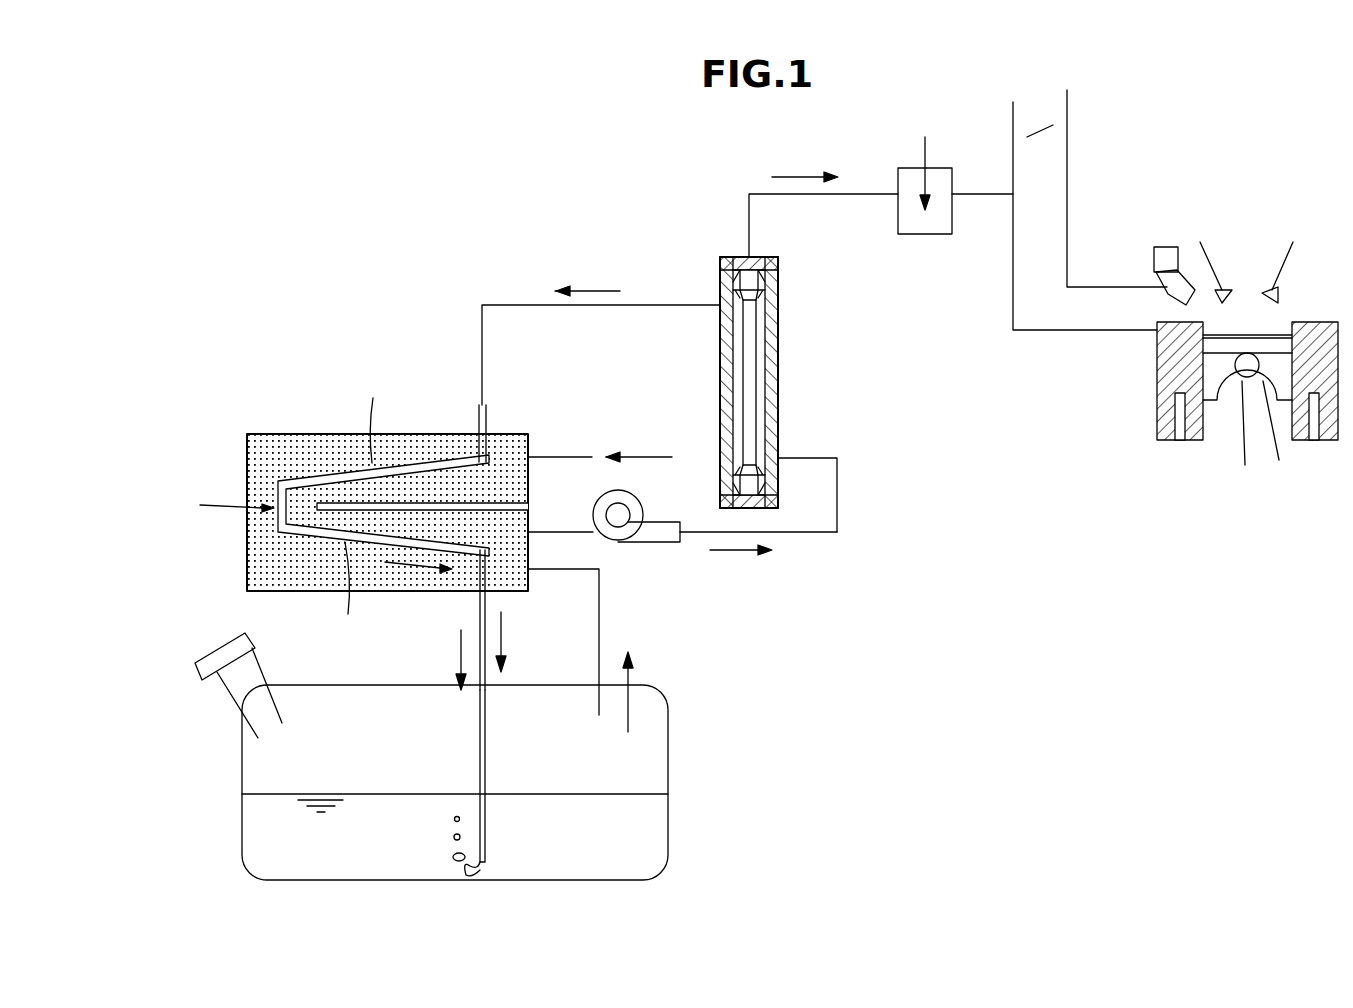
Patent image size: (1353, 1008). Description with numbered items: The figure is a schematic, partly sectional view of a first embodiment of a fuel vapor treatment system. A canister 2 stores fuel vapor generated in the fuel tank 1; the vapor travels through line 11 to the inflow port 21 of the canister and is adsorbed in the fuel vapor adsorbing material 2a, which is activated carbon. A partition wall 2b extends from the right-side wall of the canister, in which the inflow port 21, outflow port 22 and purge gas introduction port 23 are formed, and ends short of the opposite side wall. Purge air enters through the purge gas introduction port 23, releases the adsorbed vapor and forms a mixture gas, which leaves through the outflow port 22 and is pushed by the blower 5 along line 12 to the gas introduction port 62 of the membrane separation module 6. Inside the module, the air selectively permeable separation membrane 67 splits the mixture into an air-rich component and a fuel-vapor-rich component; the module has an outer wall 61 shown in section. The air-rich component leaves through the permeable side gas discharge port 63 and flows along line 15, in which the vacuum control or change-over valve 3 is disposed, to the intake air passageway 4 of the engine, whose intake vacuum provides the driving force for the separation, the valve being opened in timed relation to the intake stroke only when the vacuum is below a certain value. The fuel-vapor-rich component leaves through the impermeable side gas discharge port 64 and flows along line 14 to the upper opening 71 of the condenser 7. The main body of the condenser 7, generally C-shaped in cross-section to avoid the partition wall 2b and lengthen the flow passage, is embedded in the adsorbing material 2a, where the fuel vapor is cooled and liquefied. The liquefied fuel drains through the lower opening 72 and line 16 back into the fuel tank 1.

The fuel tank 1 is at (670, 716).
The canister 2 is at (358, 495).
The fuel vapor adsorbing material 2a is at (262, 565).
The partition wall 2b is at (510, 495).
The vacuum control or change-over valve 3 is at (925, 236).
The intake air passageway 4 is at (1069, 149).
The blower 5 is at (660, 543).
The membrane separation module 6 is at (766, 344).
The condenser 7 is at (225, 505).
The line 11 is at (601, 603).
The line 12 is at (839, 491).
The line 14 is at (513, 300).
The line 15 is at (835, 196).
The line or pipe 16 is at (487, 765).
The inflow port 21 is at (530, 568).
The outflow port 22 is at (530, 530).
The purge gas introduction port 23 is at (530, 455).
The separator outer wall 61 is at (781, 308).
The gas introduction port 62 is at (781, 432).
The permeable side gas discharge port 63 is at (748, 262).
The impermeable side gas discharge port 64 is at (736, 296).
The separation membrane 67 is at (759, 401).
The upper opening 71 is at (478, 418).
The lower opening 72 is at (487, 603).